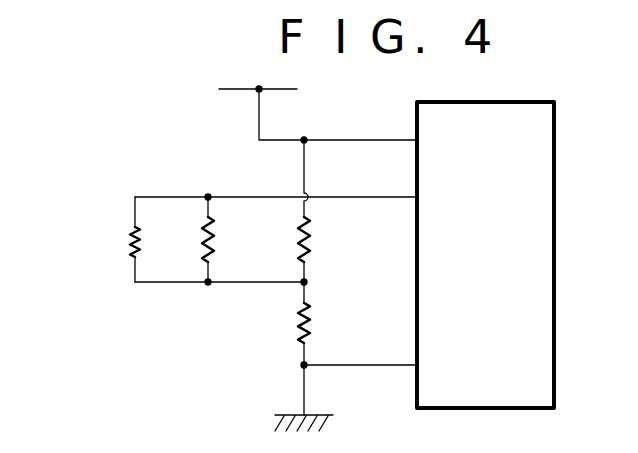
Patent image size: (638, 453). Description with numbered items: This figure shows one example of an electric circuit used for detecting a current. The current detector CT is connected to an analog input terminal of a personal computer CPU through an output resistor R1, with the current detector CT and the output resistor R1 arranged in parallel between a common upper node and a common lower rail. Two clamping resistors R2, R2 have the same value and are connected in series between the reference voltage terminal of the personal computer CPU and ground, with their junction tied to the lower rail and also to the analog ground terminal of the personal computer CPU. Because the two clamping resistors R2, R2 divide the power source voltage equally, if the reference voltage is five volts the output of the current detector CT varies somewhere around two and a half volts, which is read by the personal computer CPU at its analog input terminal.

The current detector CT is at (95, 239).
The output resistor R1 is at (237, 239).
The clamping resistor R2 is at (332, 241).
The personal computer CPU is at (485, 255).